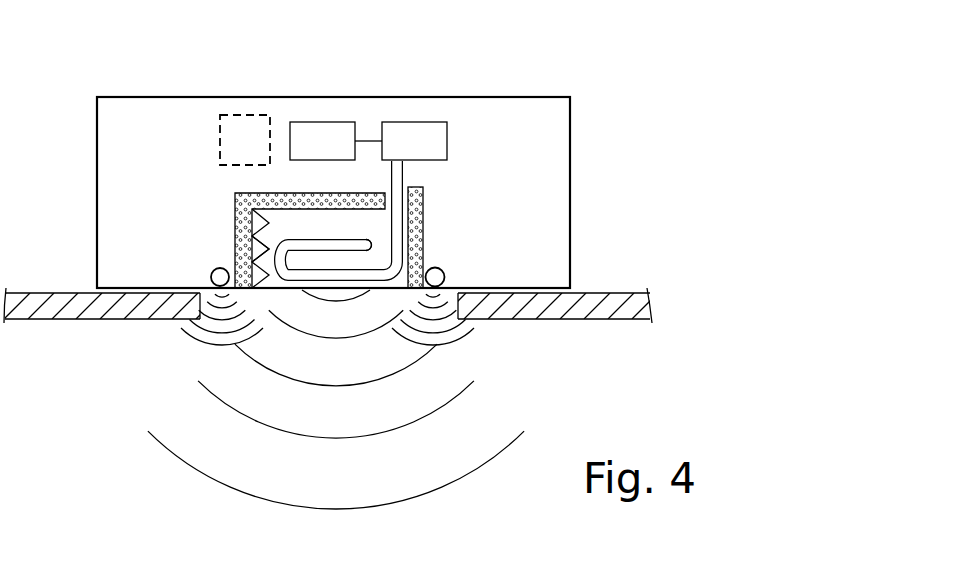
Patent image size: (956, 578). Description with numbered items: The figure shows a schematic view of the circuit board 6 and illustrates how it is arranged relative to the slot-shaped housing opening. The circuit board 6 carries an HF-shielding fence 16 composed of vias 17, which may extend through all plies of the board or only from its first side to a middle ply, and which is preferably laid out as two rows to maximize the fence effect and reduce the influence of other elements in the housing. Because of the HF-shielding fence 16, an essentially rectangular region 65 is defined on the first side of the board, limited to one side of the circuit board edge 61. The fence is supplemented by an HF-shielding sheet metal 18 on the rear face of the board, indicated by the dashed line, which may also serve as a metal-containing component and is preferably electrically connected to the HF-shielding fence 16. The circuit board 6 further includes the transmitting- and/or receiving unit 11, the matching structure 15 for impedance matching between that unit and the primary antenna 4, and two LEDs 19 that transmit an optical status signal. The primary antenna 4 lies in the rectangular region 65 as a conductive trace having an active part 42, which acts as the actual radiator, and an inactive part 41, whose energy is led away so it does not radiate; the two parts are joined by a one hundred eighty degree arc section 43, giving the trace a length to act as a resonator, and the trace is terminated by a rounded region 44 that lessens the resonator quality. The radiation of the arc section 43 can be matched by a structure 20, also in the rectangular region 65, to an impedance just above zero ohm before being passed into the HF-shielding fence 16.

The circuit board 6 is at (534, 83).
The inactive part 41 is at (302, 230).
The rectangular region 65 is at (359, 226).
The HF-shielding sheet metal 18 is at (232, 154).
The transmitting- and/or receiving unit 11 is at (309, 154).
The matching structure 15 is at (401, 154).
The HF-shielding fence 16 is at (227, 185).
The vias 17 is at (240, 217).
The 180° arc section 43 is at (243, 247).
The LEDs 19 is at (202, 263).
The primary antenna 4 is at (371, 234).
The rounded region 44 is at (380, 247).
The active part 42 is at (312, 298).
The structure 20 is at (257, 298).
The circuit board edge 61 is at (535, 296).